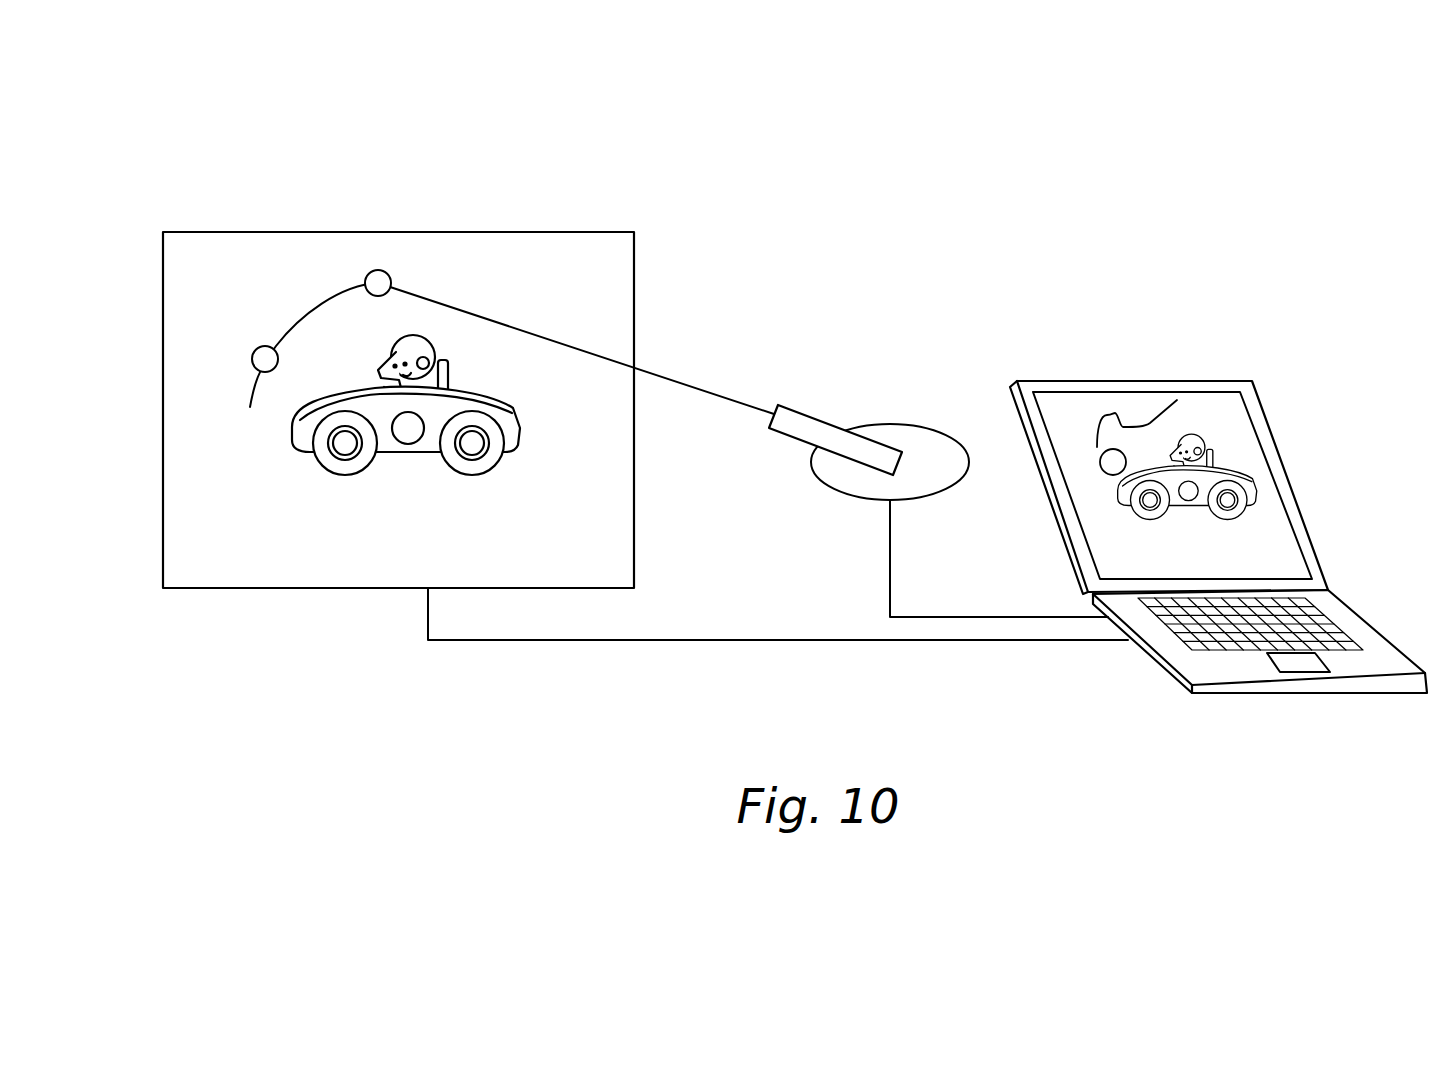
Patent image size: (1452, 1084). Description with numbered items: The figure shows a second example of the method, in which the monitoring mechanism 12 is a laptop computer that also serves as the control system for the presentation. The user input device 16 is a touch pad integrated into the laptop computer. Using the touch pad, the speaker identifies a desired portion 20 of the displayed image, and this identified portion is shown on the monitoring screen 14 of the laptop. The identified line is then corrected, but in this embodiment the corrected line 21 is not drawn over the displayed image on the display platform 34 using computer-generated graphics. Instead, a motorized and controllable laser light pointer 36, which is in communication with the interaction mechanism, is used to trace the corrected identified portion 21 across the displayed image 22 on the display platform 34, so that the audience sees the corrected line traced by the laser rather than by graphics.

The monitoring mechanism 12 is at (1167, 381).
The monitoring screen 14 is at (1300, 533).
The user input device 16 is at (1293, 663).
The desired portion 20 is at (1097, 437).
The corrected line 21 is at (283, 332).
The displayed image 22 is at (248, 558).
The display platform 34 is at (258, 231).
The laser light pointer 36 is at (824, 421).